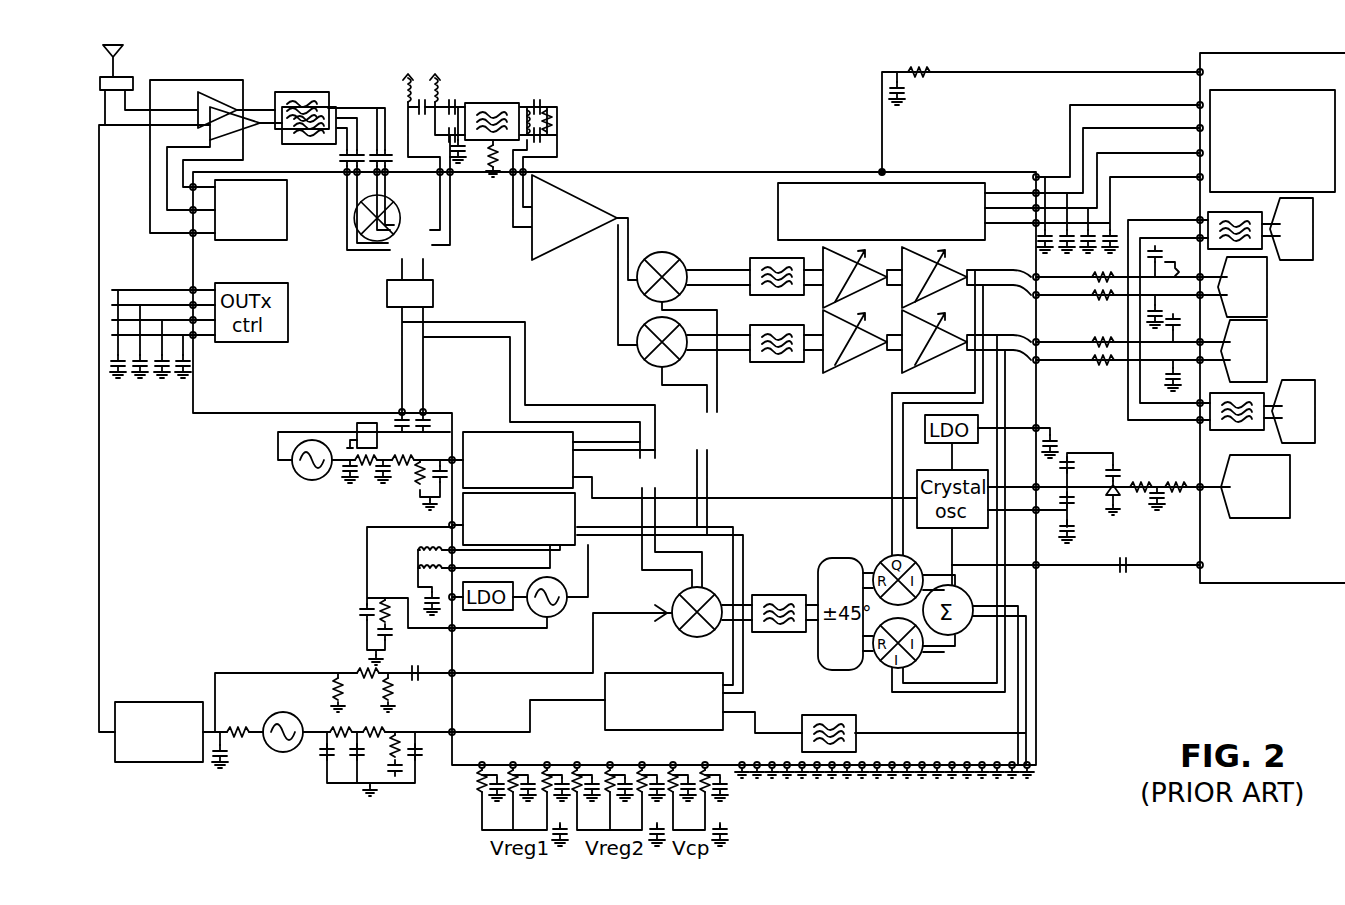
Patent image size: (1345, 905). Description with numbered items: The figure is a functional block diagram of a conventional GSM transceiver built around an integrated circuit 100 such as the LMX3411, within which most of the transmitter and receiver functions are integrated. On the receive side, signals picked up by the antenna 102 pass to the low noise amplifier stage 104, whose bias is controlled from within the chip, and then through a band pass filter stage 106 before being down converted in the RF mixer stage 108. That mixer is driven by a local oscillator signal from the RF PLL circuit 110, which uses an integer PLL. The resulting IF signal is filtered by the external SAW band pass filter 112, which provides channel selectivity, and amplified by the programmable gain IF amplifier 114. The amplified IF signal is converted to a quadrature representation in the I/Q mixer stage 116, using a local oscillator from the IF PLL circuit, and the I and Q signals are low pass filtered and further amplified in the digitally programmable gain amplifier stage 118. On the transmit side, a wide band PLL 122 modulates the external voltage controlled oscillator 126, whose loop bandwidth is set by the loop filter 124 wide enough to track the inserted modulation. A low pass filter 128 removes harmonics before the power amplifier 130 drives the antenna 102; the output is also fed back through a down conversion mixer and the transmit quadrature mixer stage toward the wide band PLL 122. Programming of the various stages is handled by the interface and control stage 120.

The circuit 100 is at (228, 413).
The antenna 102 is at (128, 47).
The low noise amplifier stage 104 is at (259, 84).
The band pass filter stage 106 is at (348, 90).
The RF mixer stage 108 is at (435, 249).
The RF PLL circuit 110 is at (328, 499).
The external SAW band pass filter 112 is at (508, 97).
The IF amplifier 114 is at (588, 177).
The I/Q mixer stage 116 is at (698, 256).
The digitally programmable gain amplifier stage 118 is at (773, 250).
The interface and control stage 120 is at (815, 183).
The wide band PLL 122 is at (605, 722).
The loop filter 124 is at (345, 798).
The external voltage control oscillator 126 is at (283, 713).
The low pass filter 128 is at (205, 778).
The power amplifier 130 is at (163, 702).